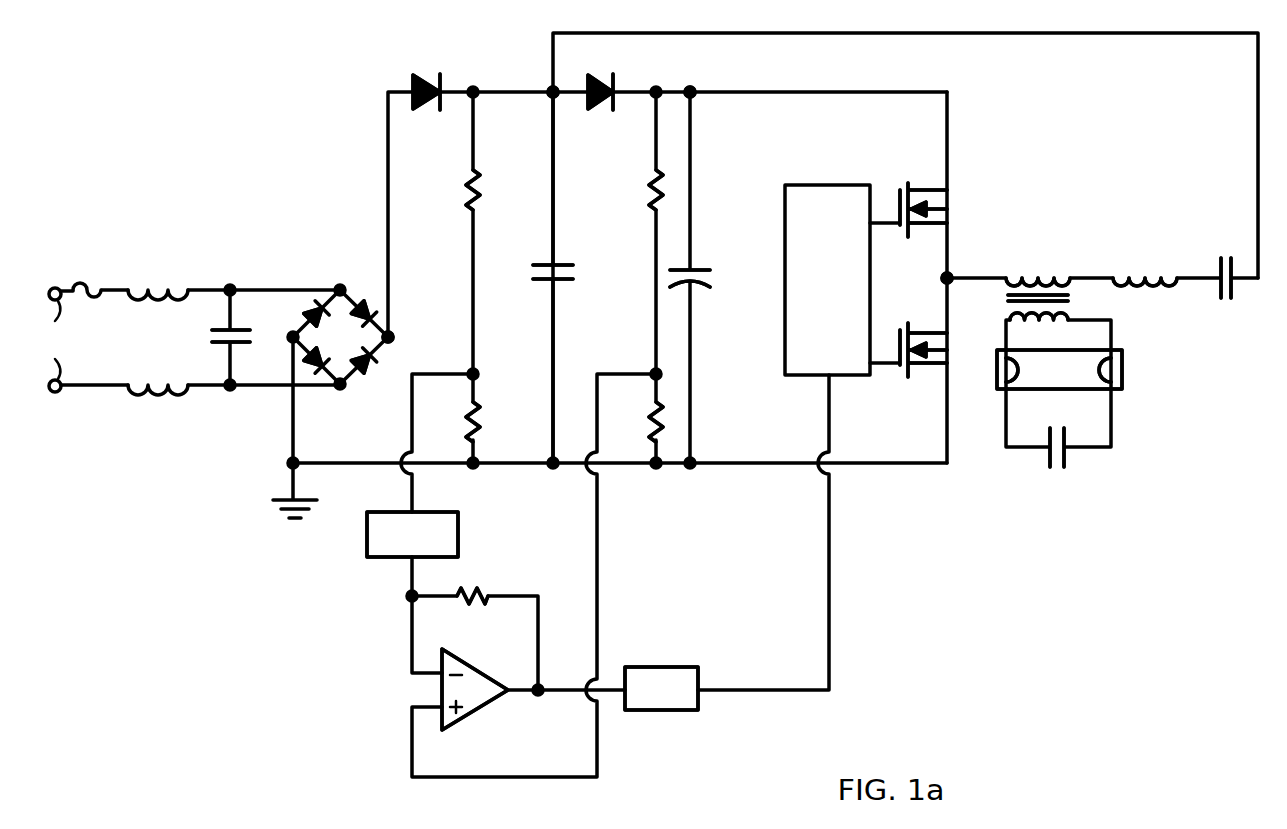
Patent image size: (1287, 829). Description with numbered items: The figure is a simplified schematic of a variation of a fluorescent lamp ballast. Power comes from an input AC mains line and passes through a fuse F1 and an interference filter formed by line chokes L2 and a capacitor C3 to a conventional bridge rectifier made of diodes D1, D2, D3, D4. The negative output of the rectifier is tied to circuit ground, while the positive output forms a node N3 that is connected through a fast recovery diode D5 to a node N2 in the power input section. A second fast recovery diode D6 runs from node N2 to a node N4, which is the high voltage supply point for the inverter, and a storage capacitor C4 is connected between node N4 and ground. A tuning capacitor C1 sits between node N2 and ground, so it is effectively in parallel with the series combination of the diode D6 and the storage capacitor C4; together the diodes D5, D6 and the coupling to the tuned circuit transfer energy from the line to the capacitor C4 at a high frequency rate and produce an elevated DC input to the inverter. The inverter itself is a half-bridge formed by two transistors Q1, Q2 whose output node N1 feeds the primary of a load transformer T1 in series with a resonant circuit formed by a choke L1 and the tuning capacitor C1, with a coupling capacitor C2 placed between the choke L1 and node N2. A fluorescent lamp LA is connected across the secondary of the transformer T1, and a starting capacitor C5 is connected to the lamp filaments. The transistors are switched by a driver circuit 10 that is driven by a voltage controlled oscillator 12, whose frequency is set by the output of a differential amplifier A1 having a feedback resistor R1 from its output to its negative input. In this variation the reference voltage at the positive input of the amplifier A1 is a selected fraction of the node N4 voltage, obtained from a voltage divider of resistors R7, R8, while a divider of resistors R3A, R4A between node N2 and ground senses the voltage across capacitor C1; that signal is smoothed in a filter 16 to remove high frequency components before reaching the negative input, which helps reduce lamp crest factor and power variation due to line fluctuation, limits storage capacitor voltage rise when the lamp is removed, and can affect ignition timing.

The input AC is at (58, 340).
The fuse F1 is at (87, 274).
The line chokes L2 is at (158, 339).
The capacitor C3 is at (212, 336).
The bridge rectifier diode D1 is at (368, 310).
The bridge rectifier diode D2 is at (372, 358).
The bridge rectifier diode D3 is at (332, 370).
The bridge rectifier diode D4 is at (312, 308).
The node N3 is at (392, 335).
The fast recovery diode D5 is at (427, 74).
The second fast recovery diode D6 is at (602, 74).
The node N2 is at (555, 94).
The node N4 is at (692, 91).
The resistor R4A is at (493, 190).
The resistor R3A is at (493, 422).
The resistor R8 is at (640, 190).
The resistor R7 is at (638, 422).
The tuning capacitor C1 is at (569, 273).
The storage capacitor C4 is at (706, 277).
The driver circuit 10 is at (795, 185).
The transistor Q1 is at (923, 193).
The transistor Q2 is at (923, 365).
The output node N1 is at (949, 280).
The load transformer T1 is at (1053, 299).
The choke L1 is at (1145, 262).
The coupling capacitor C2 is at (1227, 295).
The fluorescent lamp LA is at (1076, 369).
The starting capacitor C5 is at (1057, 465).
The filter 16 is at (459, 527).
The feedback resistor R1 is at (472, 610).
The differential amplifier A1 is at (462, 720).
The voltage controlled oscillator 12 is at (653, 667).